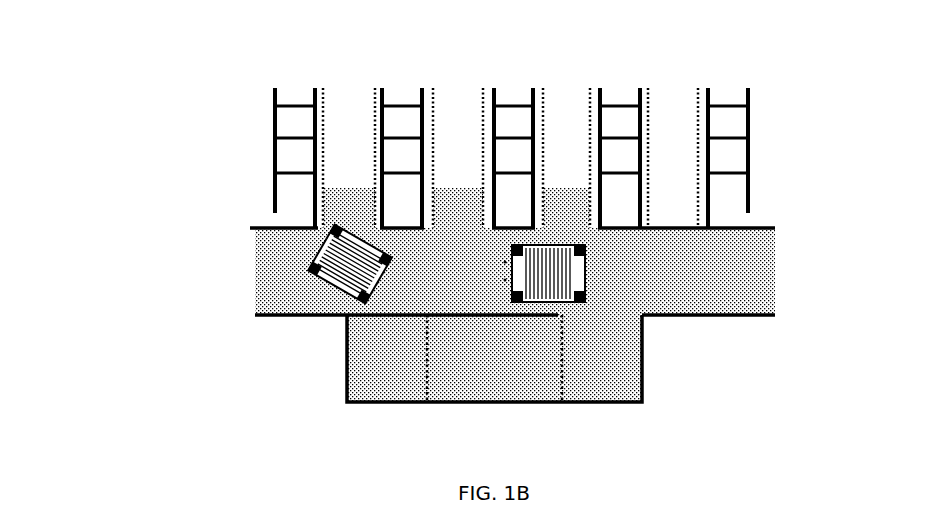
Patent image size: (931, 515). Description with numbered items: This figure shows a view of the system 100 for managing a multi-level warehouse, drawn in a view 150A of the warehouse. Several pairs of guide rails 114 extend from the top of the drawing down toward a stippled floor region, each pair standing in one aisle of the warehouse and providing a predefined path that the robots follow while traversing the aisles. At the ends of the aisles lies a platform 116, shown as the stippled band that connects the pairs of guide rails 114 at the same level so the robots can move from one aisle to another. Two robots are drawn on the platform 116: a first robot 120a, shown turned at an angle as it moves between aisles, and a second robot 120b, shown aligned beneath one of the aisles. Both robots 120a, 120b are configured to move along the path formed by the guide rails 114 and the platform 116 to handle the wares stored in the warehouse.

The system 100 is at (98, 60).
The front view 150A is at (803, 83).
The guide rails 114 is at (373, 108).
The platform 116 is at (275, 298).
The robot 120a is at (312, 250).
The robot 120b is at (588, 282).